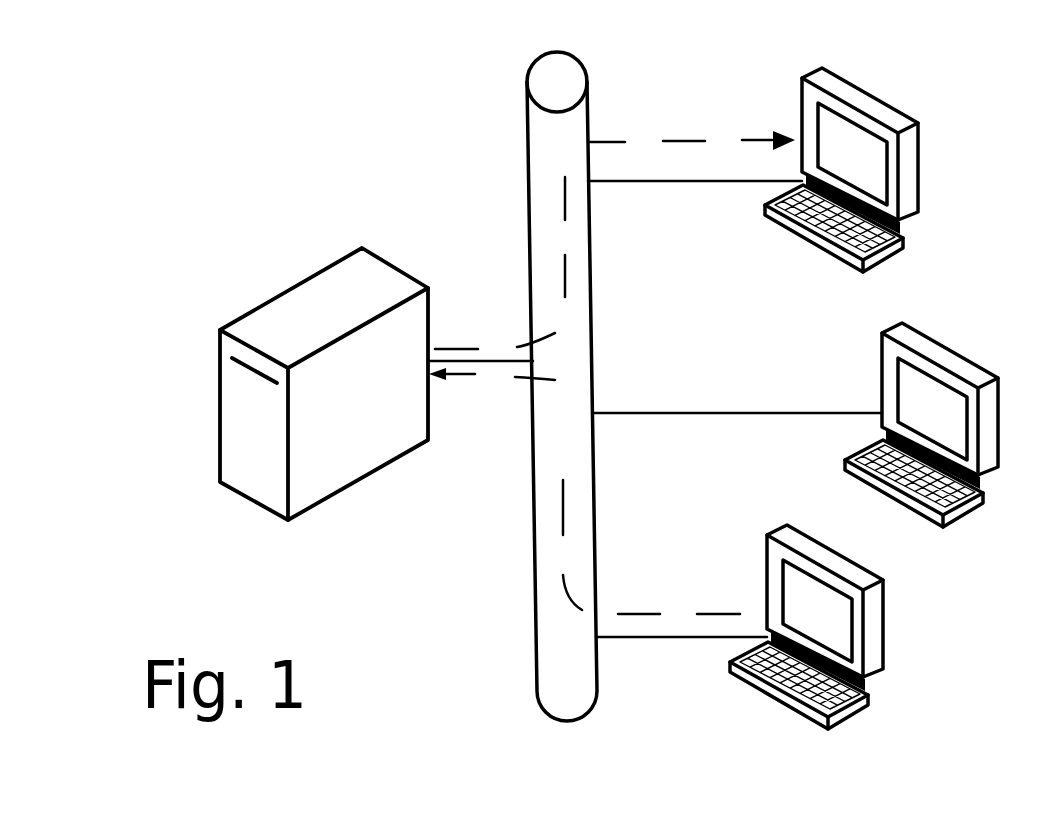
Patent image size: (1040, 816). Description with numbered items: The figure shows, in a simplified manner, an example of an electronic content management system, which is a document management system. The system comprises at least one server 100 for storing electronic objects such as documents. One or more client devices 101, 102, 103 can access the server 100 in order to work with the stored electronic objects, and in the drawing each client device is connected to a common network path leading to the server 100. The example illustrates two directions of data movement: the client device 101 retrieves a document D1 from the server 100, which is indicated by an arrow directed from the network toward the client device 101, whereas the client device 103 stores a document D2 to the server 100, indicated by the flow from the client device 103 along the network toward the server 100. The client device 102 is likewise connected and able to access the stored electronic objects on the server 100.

The server 100 is at (324, 384).
The client device 101 is at (905, 106).
The client device 102 is at (923, 334).
The client device 103 is at (883, 643).
The document D1 is at (491, 346).
The document D2 is at (689, 601).